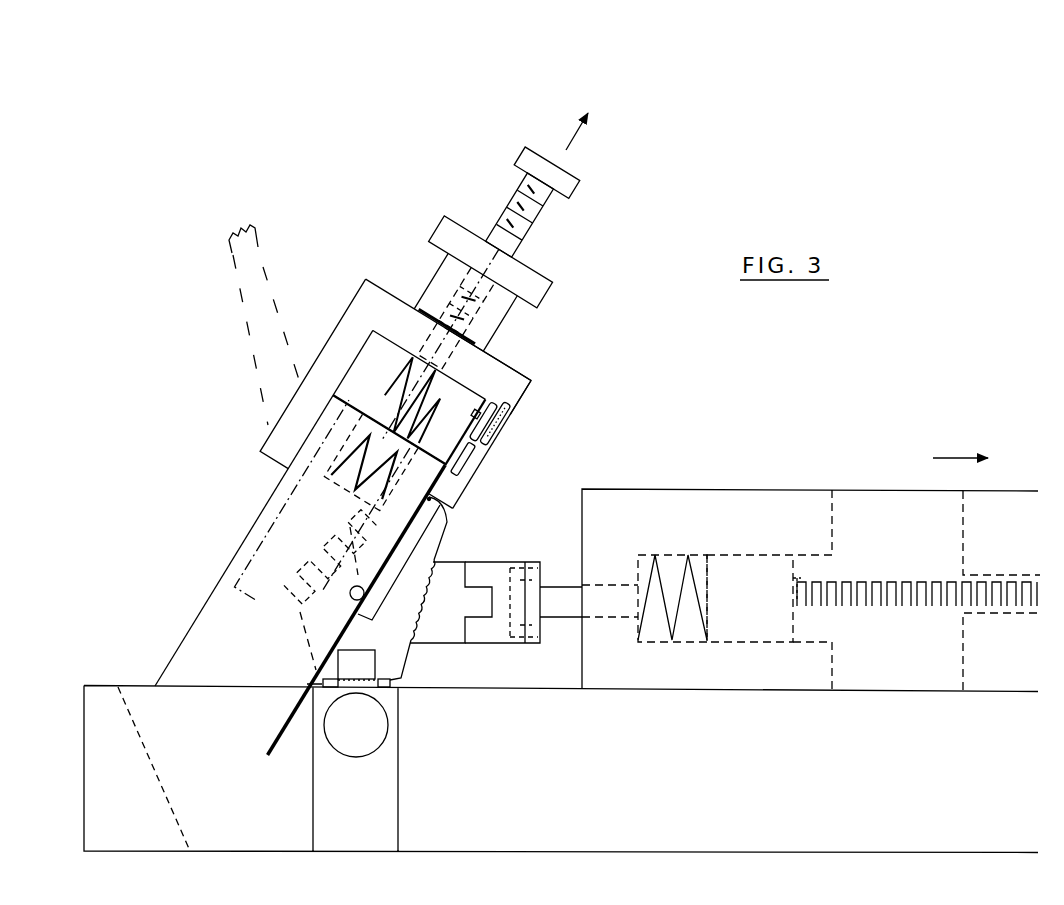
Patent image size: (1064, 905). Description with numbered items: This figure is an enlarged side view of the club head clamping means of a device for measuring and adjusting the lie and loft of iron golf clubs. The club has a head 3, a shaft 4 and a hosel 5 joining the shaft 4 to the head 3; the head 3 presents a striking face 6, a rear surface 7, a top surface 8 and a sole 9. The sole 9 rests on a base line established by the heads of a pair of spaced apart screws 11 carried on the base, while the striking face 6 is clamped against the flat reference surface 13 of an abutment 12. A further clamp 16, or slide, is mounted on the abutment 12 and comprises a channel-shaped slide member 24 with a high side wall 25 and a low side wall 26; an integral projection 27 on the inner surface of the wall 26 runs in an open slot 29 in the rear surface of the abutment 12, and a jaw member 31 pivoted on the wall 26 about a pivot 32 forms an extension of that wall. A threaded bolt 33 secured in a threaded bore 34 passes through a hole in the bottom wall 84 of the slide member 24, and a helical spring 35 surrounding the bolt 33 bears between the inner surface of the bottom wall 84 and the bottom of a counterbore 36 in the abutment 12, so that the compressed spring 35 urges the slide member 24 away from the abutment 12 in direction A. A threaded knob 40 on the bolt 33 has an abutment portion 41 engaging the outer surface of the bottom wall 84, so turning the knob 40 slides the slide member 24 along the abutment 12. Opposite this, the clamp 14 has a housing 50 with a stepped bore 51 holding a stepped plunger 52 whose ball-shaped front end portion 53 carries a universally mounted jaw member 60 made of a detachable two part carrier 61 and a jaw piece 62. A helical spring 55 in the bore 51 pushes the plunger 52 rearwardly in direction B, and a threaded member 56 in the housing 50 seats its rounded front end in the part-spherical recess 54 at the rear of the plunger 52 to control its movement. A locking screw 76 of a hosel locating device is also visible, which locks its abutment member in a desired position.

The head 3 is at (416, 648).
The shaft 4 is at (242, 277).
The hosel 5 is at (300, 625).
The striking face 6 is at (396, 548).
The rear surface 7 is at (440, 541).
The top surface 8 is at (431, 498).
The sole 9 is at (400, 694).
The screws 11 is at (325, 693).
The abutment 12 is at (195, 632).
The flat reference surface 13 is at (357, 593).
The clamp 14 is at (811, 551).
The further clamp 16 is at (484, 275).
The channel-shaped slide member 24 is at (338, 262).
The high side wall 25 is at (336, 342).
The low side wall 26 is at (513, 422).
The integral projection 27 is at (370, 350).
The open slot 29 is at (240, 570).
The jaw member 31 is at (476, 483).
The pivot 32 is at (510, 434).
The threaded bolt 33 is at (546, 206).
The threaded bore 34 is at (280, 545).
The helical spring 35 is at (365, 400).
The counterbore 36 is at (290, 488).
The threaded knob 40 is at (533, 284).
The abutment portion 41 is at (437, 287).
The housing 50 is at (750, 489).
The stepped bore 51 is at (670, 555).
The stepped plunger 52 is at (742, 558).
The ball-shaped front end portion 53 is at (540, 590).
The part-spherical recess 54 is at (790, 597).
The helical spring 55 is at (678, 641).
The threaded member 56 is at (915, 612).
The jaw member 60 is at (496, 593).
The two part carrier 61 is at (500, 644).
The jaw piece 62 is at (450, 636).
The locking screw 76 is at (385, 735).
The bottom wall 84 is at (498, 370).